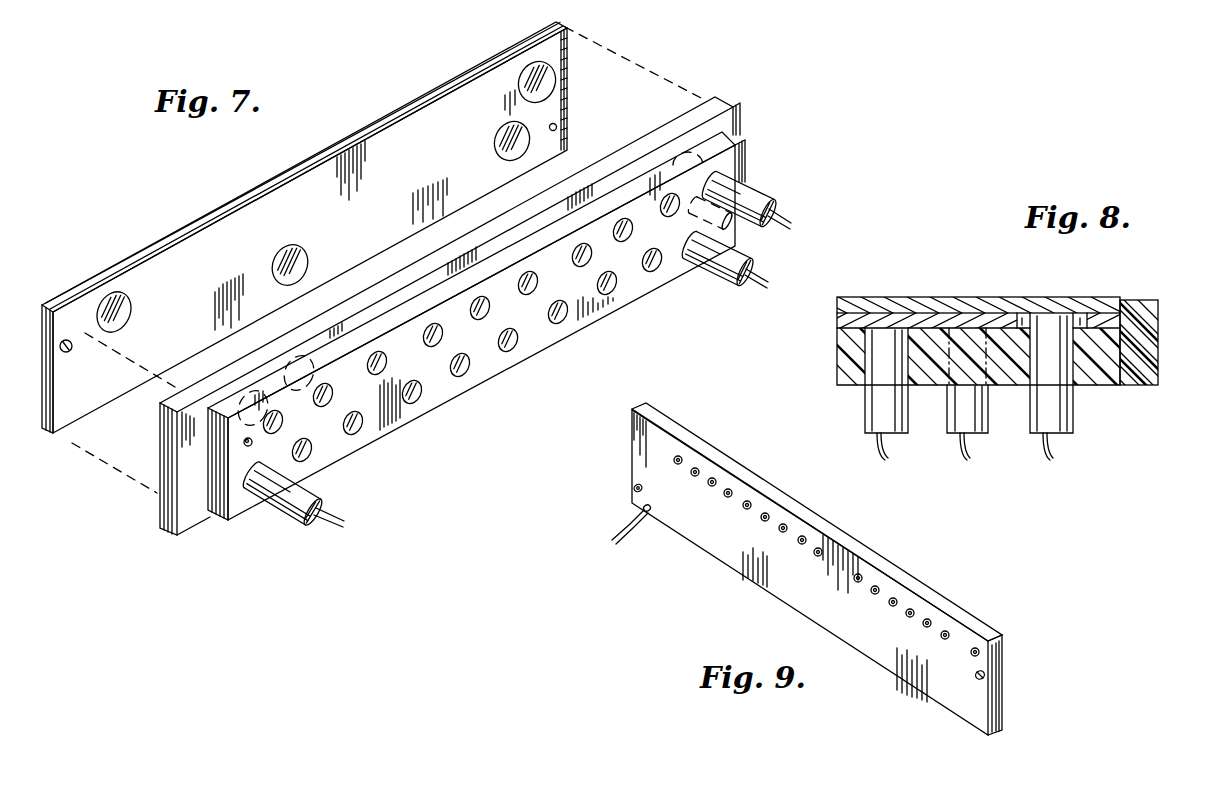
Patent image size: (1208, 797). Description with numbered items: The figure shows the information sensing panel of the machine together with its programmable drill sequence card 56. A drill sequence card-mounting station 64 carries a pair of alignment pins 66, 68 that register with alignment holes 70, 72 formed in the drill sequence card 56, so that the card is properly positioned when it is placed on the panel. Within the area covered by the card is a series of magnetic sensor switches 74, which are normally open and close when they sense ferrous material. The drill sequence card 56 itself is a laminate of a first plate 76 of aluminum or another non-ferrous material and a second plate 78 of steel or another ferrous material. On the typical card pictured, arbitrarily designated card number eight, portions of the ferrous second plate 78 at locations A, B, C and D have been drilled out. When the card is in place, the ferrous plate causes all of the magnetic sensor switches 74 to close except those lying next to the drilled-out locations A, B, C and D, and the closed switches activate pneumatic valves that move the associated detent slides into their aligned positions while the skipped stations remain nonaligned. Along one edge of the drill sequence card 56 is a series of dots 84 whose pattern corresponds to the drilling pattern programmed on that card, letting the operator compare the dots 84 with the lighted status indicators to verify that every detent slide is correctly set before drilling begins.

In FIG. 7, the drill sequence card 56 is at (326, 255).
In FIG. 8, the drill sequence card 56 is at (948, 316).
In FIG. 9, the drill sequence card 56 is at (816, 553).
In FIG. 7, the drill sequence card-mounting station 64 is at (188, 520).
In FIG. 8, the drill sequence card-mounting station 64 is at (1143, 337).
In FIG. 7, the alignment pin 66 is at (207, 441).
In FIG. 7, the alignment pin 68 is at (731, 224).
In FIG. 8, the alignment pin 68 is at (1112, 387).
In FIG. 7, the alignment hole 70 is at (72, 340).
In FIG. 9, the alignment hole 70 is at (988, 675).
In FIG. 7, the alignment hole 72 is at (557, 128).
In FIG. 9, the alignment hole 72 is at (633, 489).
In FIG. 7, the magnetic sensor switch 74 is at (748, 190).
In FIG. 8, the magnetic sensor switch 74 is at (869, 423).
In FIG. 8, the first plate 76 is at (885, 300).
In FIG. 9, the first plate 76 is at (638, 427).
In FIG. 7, the second plate 78 is at (111, 387).
In FIG. 8, the second plate 78 is at (838, 326).
In FIG. 9, the second plate 78 is at (650, 410).
In FIG. 9, the dots 84 is at (748, 501).
In FIG. 7, the drilled-out location A is at (121, 292).
In FIG. 7, the drilled-out location B is at (302, 248).
In FIG. 7, the drilled-out location C is at (495, 152).
In FIG. 7, the drilled-out location D is at (532, 78).
In FIG. 8, the drilled-out location D is at (1050, 317).